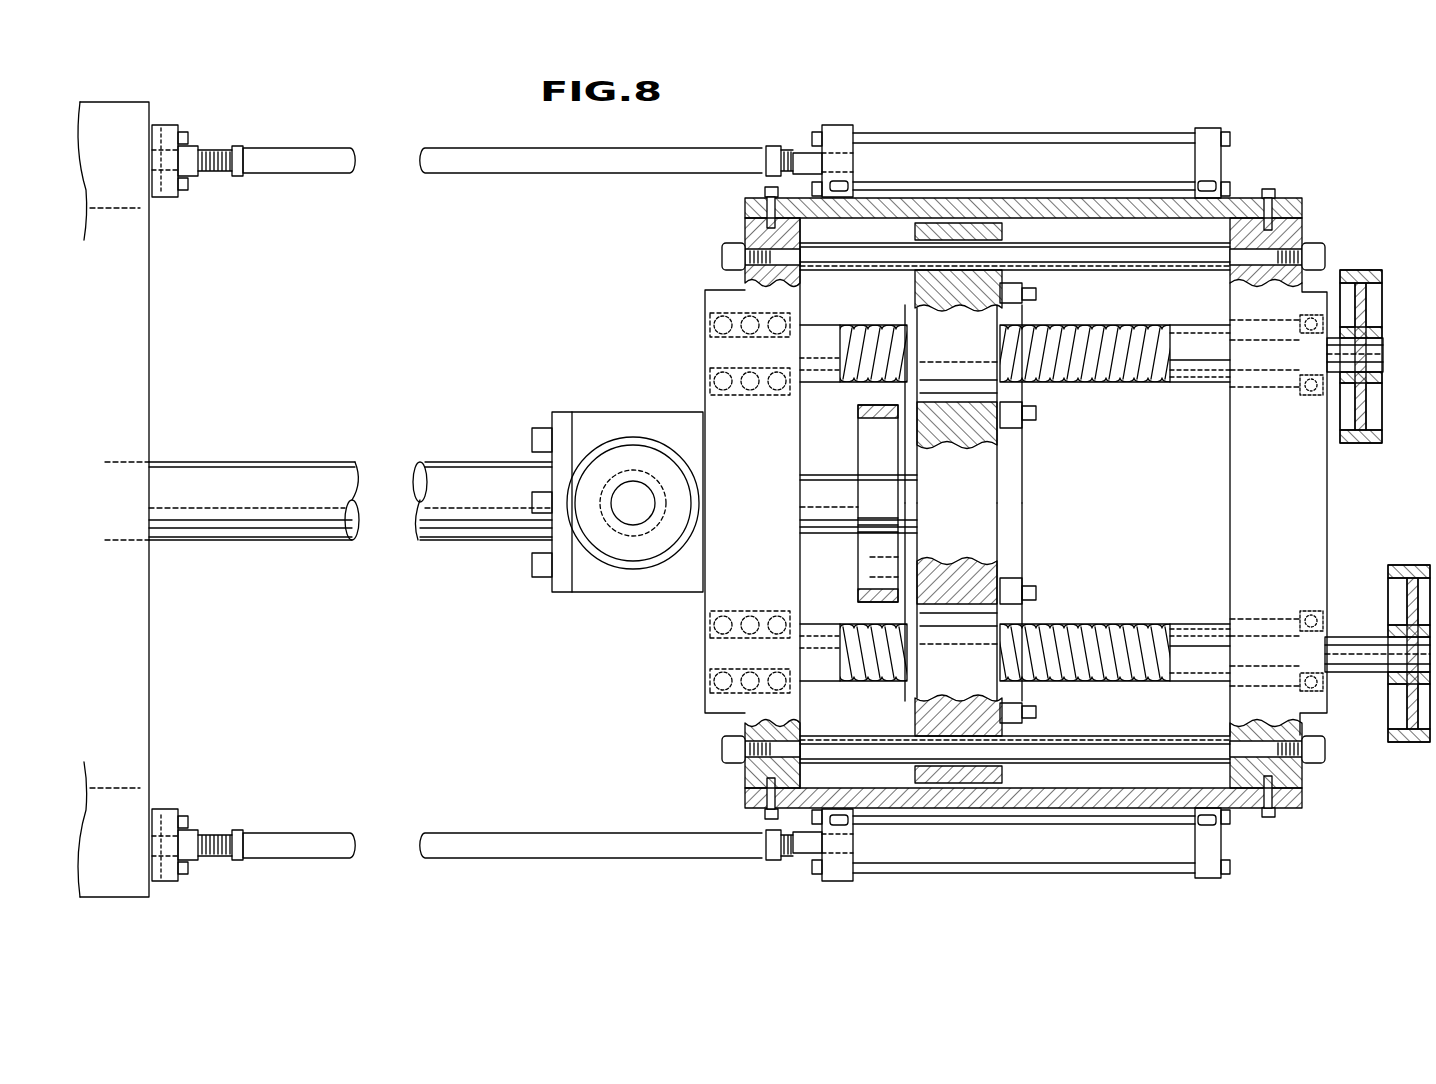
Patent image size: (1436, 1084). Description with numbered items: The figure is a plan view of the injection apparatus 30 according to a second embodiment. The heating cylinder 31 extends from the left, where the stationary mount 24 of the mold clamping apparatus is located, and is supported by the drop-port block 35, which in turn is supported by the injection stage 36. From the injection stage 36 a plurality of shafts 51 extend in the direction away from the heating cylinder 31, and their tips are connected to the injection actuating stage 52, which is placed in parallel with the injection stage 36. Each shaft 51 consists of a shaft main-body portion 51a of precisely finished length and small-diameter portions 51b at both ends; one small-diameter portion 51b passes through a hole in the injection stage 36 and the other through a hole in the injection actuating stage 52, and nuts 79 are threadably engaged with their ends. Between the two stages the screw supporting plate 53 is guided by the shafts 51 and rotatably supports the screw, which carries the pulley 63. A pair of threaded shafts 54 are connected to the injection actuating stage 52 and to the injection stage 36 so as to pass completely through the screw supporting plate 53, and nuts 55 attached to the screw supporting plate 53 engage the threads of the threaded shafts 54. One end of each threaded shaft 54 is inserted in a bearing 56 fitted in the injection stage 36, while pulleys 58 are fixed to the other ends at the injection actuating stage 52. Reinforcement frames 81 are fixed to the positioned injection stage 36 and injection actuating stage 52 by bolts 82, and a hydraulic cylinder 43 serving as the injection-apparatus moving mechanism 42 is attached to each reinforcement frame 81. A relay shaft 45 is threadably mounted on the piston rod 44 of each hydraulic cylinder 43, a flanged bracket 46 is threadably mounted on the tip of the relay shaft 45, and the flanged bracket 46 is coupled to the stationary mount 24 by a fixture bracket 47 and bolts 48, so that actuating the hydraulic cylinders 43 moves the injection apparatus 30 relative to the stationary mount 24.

The injection apparatus 30 is at (1330, 98).
The stationary mount 24 is at (118, 660).
The heating cylinder 31 is at (252, 478).
The drop-port block 35 is at (592, 580).
The injection stage 36 is at (722, 503).
The injection-apparatus moving mechanism 42 is at (472, 501).
The hydraulic cylinder 43 is at (995, 160).
The piston rod 44 is at (806, 165).
The relay shaft 45 is at (476, 175).
The flanged bracket 46 is at (198, 150).
The fixture bracket 47 is at (167, 128).
The bolts 48 is at (188, 186).
The shafts 51 is at (1020, 504).
The shaft main-body portion 51a is at (1044, 252).
The small-diameter portions 51b is at (792, 275).
The injection actuating stage 52 is at (1256, 497).
The screw supporting plate 53 is at (992, 503).
The threaded shafts 54 is at (1100, 385).
The nuts 55 is at (980, 425).
The bearings 56 is at (760, 398).
The pulleys 58 is at (1366, 300).
The pulley 63 is at (878, 577).
The nuts 79 is at (742, 250).
The reinforcement frames 81 is at (1292, 205).
The bolts 82 is at (767, 192).